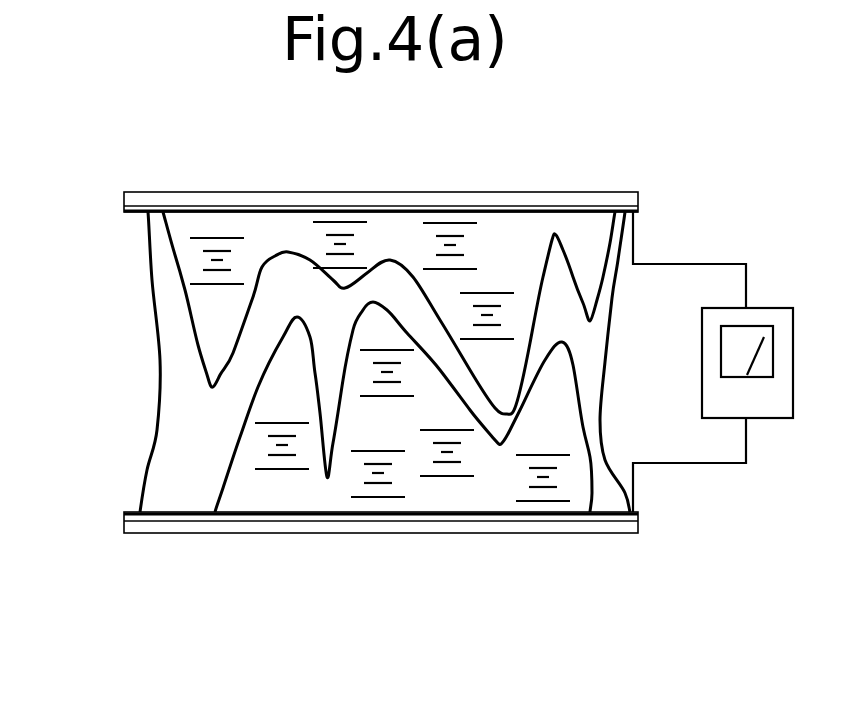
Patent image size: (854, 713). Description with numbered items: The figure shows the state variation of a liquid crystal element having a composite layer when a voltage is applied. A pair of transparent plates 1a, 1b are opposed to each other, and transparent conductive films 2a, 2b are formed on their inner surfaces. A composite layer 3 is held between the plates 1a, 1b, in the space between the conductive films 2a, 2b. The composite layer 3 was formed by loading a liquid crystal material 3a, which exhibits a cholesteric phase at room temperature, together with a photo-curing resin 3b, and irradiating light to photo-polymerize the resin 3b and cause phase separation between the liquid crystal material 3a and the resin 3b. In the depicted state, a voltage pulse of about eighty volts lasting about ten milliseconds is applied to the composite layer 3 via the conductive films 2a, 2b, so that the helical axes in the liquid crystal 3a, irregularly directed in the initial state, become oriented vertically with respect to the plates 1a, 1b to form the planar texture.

The transparent plate 1a is at (570, 197).
The transparent conductive film 2a is at (473, 208).
The transparent plate 1b is at (525, 533).
The transparent conductive film 2b is at (423, 520).
The composite layer 3 is at (322, 417).
The liquid crystal material 3a is at (246, 482).
The photo-curing resin 3b is at (178, 503).